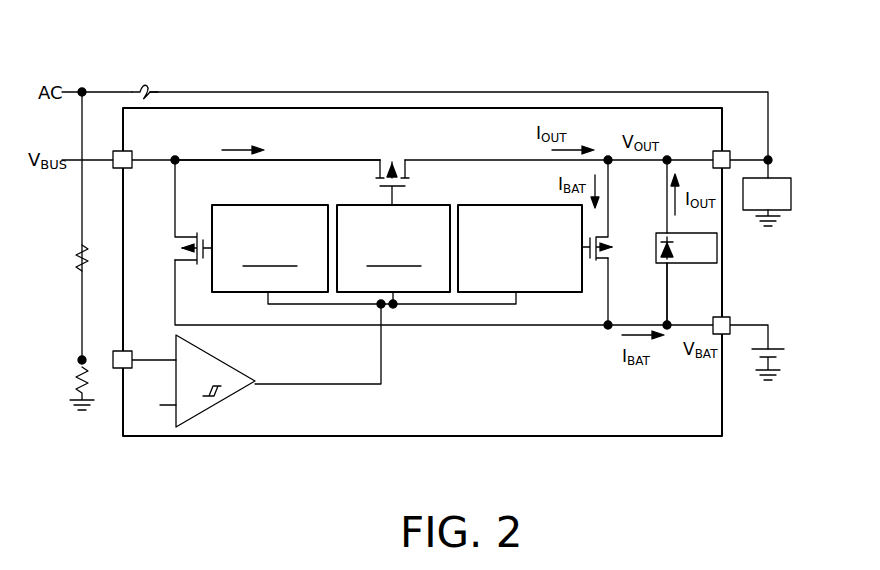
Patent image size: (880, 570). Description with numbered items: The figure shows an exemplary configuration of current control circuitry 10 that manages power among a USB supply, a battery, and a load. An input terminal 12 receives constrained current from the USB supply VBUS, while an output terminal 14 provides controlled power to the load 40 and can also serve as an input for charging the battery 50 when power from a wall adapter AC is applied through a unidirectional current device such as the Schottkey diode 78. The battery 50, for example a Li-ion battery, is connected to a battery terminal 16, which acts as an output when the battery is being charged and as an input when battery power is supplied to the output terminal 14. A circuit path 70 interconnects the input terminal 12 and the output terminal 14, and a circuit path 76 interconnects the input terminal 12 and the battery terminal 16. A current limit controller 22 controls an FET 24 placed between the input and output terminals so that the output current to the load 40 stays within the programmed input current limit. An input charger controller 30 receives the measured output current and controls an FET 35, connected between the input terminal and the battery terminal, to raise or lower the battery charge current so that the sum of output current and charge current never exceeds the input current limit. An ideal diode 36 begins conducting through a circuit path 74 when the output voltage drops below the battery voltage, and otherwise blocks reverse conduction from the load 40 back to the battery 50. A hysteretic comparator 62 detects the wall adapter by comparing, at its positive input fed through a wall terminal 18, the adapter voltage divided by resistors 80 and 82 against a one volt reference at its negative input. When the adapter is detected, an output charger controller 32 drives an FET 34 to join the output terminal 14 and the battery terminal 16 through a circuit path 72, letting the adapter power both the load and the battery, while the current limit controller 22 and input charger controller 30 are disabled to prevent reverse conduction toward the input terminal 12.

The current control circuitry 10 is at (571, 442).
The input terminal 12 is at (132, 155).
The output terminal 14 is at (730, 151).
The battery terminal 16 is at (727, 317).
The wall terminal 18 is at (128, 351).
The current limit controller 22 is at (368, 204).
The FET 24 is at (406, 160).
The input charger controller 30 is at (265, 204).
The output charger controller 32 is at (486, 204).
The FET 34 is at (606, 225).
The FET 35 is at (180, 233).
The ideal diode 36 is at (717, 242).
The load 40 is at (772, 176).
The battery 50 is at (774, 346).
The hysteretic comparator 62 is at (239, 372).
The circuit path 70 is at (297, 160).
The circuit path 72 is at (604, 298).
The circuit path 74 is at (665, 283).
The circuit path 76 is at (447, 328).
The Schottkey diode 78 is at (130, 90).
The resistor 80 is at (72, 258).
The resistor 82 is at (74, 385).